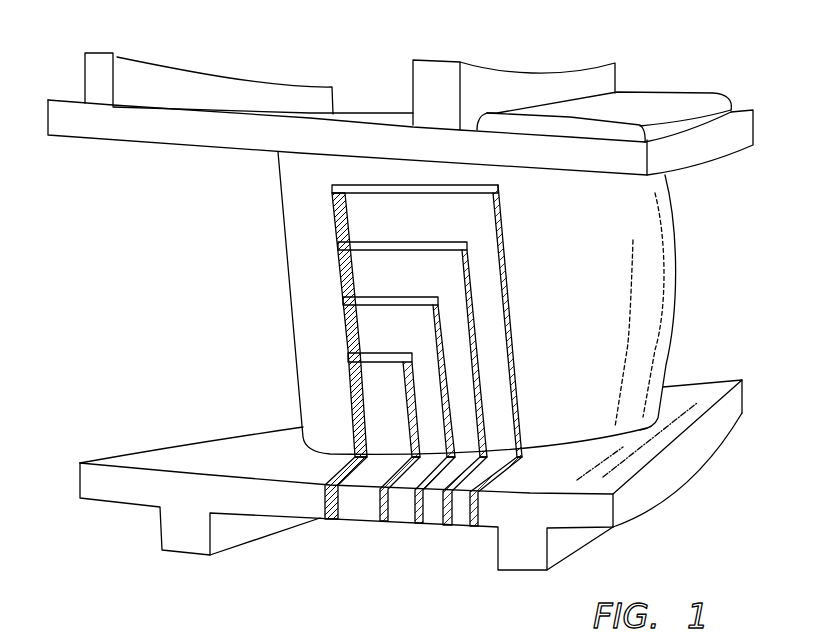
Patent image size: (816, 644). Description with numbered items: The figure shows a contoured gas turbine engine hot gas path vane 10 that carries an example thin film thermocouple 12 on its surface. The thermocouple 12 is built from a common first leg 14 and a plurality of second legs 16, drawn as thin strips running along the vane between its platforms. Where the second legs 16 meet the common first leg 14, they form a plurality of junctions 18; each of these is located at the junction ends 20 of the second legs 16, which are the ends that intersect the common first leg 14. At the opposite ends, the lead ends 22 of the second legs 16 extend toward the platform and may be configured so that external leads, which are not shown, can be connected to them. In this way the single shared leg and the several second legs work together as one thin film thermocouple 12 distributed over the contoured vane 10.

The hot gas path vane 10 is at (673, 70).
The thin film thermocouple 12 is at (527, 307).
The common first leg 14 is at (330, 503).
The second legs 16 is at (513, 370).
The junctions 18 is at (337, 247).
The junction ends 20 is at (403, 297).
The lead ends 22 is at (419, 510).